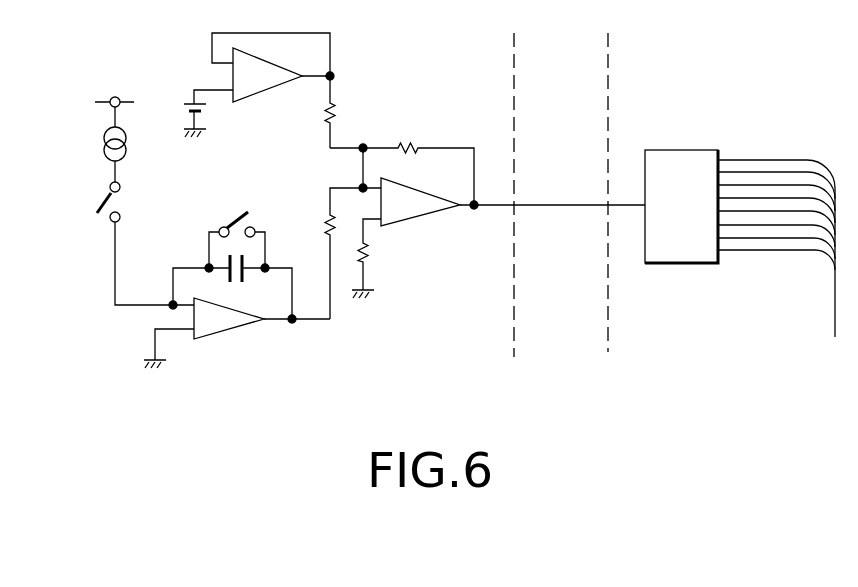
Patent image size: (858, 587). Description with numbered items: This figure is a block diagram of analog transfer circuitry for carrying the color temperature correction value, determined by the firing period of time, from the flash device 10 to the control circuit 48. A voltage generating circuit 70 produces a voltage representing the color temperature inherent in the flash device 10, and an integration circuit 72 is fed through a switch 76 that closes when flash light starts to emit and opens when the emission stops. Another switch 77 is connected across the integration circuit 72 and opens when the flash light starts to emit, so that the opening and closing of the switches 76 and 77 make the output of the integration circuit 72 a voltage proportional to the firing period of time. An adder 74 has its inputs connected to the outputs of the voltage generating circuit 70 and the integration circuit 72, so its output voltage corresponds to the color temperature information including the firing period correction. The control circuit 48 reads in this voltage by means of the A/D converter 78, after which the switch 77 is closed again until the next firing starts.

The flash device 10 is at (489, 80).
The control circuit 48 is at (639, 316).
The voltage generating circuit 70 is at (267, 81).
The integration circuit 72 is at (228, 322).
The adder 74 is at (422, 207).
The switch 76 is at (102, 200).
The switch 77 is at (236, 214).
The A/D converter 78 is at (697, 264).